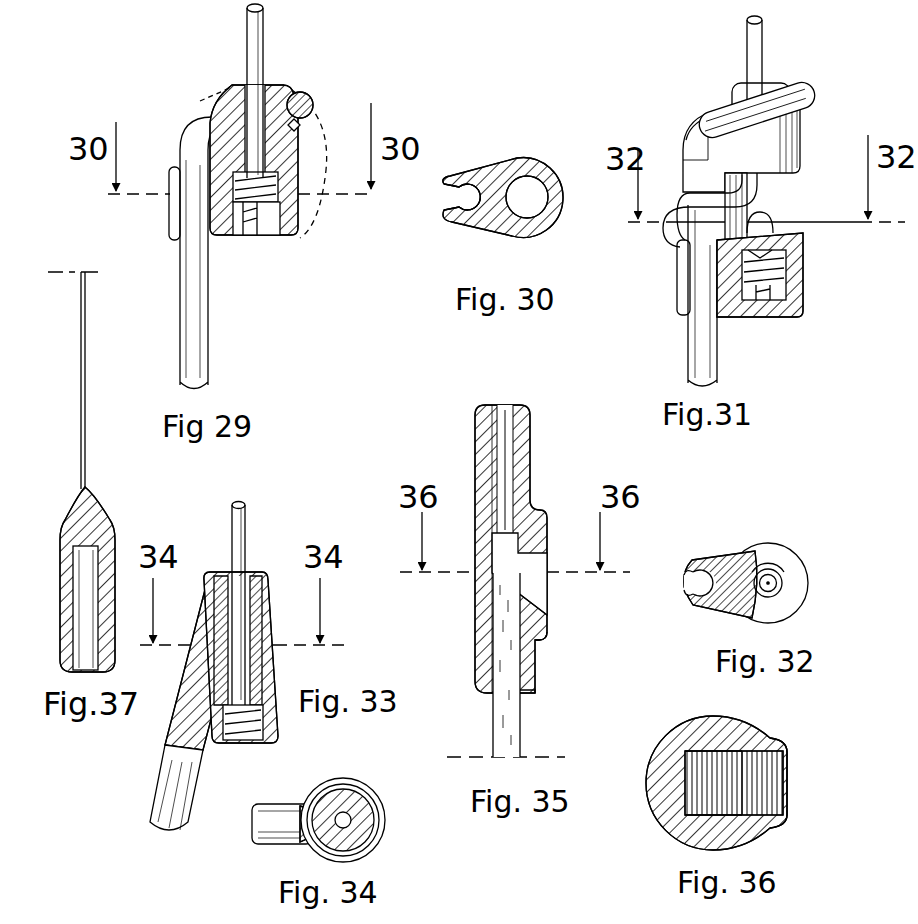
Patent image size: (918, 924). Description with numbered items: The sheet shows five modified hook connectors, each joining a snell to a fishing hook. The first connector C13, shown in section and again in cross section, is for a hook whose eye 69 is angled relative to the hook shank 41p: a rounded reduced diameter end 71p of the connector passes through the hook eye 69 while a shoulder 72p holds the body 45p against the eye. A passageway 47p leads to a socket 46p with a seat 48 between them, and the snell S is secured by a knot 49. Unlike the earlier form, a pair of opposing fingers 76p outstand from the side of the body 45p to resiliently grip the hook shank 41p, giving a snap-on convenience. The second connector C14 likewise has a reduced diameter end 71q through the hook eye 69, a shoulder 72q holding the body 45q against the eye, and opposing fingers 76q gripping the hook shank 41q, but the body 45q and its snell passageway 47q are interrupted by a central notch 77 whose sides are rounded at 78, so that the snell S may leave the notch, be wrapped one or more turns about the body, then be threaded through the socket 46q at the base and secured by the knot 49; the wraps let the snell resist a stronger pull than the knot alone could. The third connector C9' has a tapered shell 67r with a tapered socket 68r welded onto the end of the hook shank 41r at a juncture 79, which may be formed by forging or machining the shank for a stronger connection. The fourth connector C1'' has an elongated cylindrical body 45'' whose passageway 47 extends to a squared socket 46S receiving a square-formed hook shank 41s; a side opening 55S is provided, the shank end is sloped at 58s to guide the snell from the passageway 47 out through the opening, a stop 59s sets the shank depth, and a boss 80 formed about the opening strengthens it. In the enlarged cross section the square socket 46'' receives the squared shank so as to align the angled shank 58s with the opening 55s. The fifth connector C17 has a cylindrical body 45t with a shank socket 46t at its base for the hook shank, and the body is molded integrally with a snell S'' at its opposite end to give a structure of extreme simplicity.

In FIG. 29, the snell S is at (238, 91).
In FIG. 31, the snell S is at (736, 58).
In FIG. 33, the snell S is at (220, 604).
In FIG. 29, the connector C13 is at (286, 70).
In FIG. 29, the rounded reduced diameter end 71p is at (232, 88).
In FIG. 29, the body 45p is at (212, 118).
In FIG. 30, the body 45p is at (527, 157).
In FIG. 29, the hook eye 69 is at (311, 99).
In FIG. 31, the hook eye 69 is at (795, 95).
In FIG. 29, the shoulder 72p is at (300, 132).
In FIG. 29, the passageway 47p is at (298, 152).
In FIG. 29, the seat 48 is at (285, 175).
In FIG. 31, the seat 48 is at (786, 276).
In FIG. 29, the opposing fingers 76p is at (175, 215).
In FIG. 30, the opposing fingers 76p is at (442, 197).
In FIG. 29, the socket 46p is at (270, 236).
In FIG. 30, the socket 46p is at (507, 237).
In FIG. 29, the knot 49 is at (250, 238).
In FIG. 31, the knot 49 is at (767, 318).
In FIG. 29, the hook shank 41p is at (190, 320).
In FIG. 31, the connector C14 is at (698, 107).
In FIG. 31, the reduced diameter end 71q is at (748, 85).
In FIG. 31, the shoulder 72q is at (790, 137).
In FIG. 31, the body section 45q is at (785, 155).
In FIG. 32, the body section 45q is at (800, 605).
In FIG. 31, the rounded sides 78 is at (743, 204).
In FIG. 32, the rounded sides 78 is at (746, 556).
In FIG. 31, the central notch 77 is at (794, 213).
In FIG. 32, the central notch 77 is at (780, 548).
In FIG. 31, the snell passageway 47q is at (780, 258).
In FIG. 32, the snell passageway 47q is at (775, 580).
In FIG. 31, the socket 46q is at (790, 305).
In FIG. 31, the opposing fingers 76q is at (680, 280).
In FIG. 32, the opposing fingers 76q is at (688, 587).
In FIG. 31, the hook shank 41q is at (705, 345).
In FIG. 33, the connector C9' is at (225, 668).
In FIG. 34, the connector C9' is at (338, 820).
In FIG. 33, the juncture 79 is at (212, 608).
In FIG. 34, the juncture 79 is at (312, 800).
In FIG. 33, the tapered shell 67r is at (268, 604).
In FIG. 34, the tapered shell 67r is at (358, 790).
In FIG. 33, the tapered socket 68r is at (272, 668).
In FIG. 33, the hook shank 41r is at (167, 773).
In FIG. 34, the hook shank 41r is at (272, 815).
In FIG. 35, the connector C1'' is at (477, 580).
In FIG. 35, the passageway 47 is at (508, 435).
In FIG. 35, the body 45'' is at (530, 549).
In FIG. 36, the body 45'' is at (697, 783).
In FIG. 35, the squared socket 46S is at (510, 547).
In FIG. 35, the side opening 55S is at (535, 585).
In FIG. 35, the sloped end of hook shank 58s is at (478, 598).
In FIG. 36, the sloped end of hook shank 58s is at (676, 816).
In FIG. 35, the boss 80 is at (548, 636).
In FIG. 36, the boss 80 is at (765, 740).
In FIG. 35, the stop 59s is at (530, 695).
In FIG. 35, the square-formed hook shank 41s is at (512, 740).
In FIG. 36, the square socket 46'' is at (683, 743).
In FIG. 36, the side opening 55s is at (780, 785).
In FIG. 37, the connector C17 is at (64, 506).
In FIG. 37, the snell S'' is at (66, 380).
In FIG. 37, the body 45t is at (110, 517).
In FIG. 37, the shank socket 46t is at (87, 576).